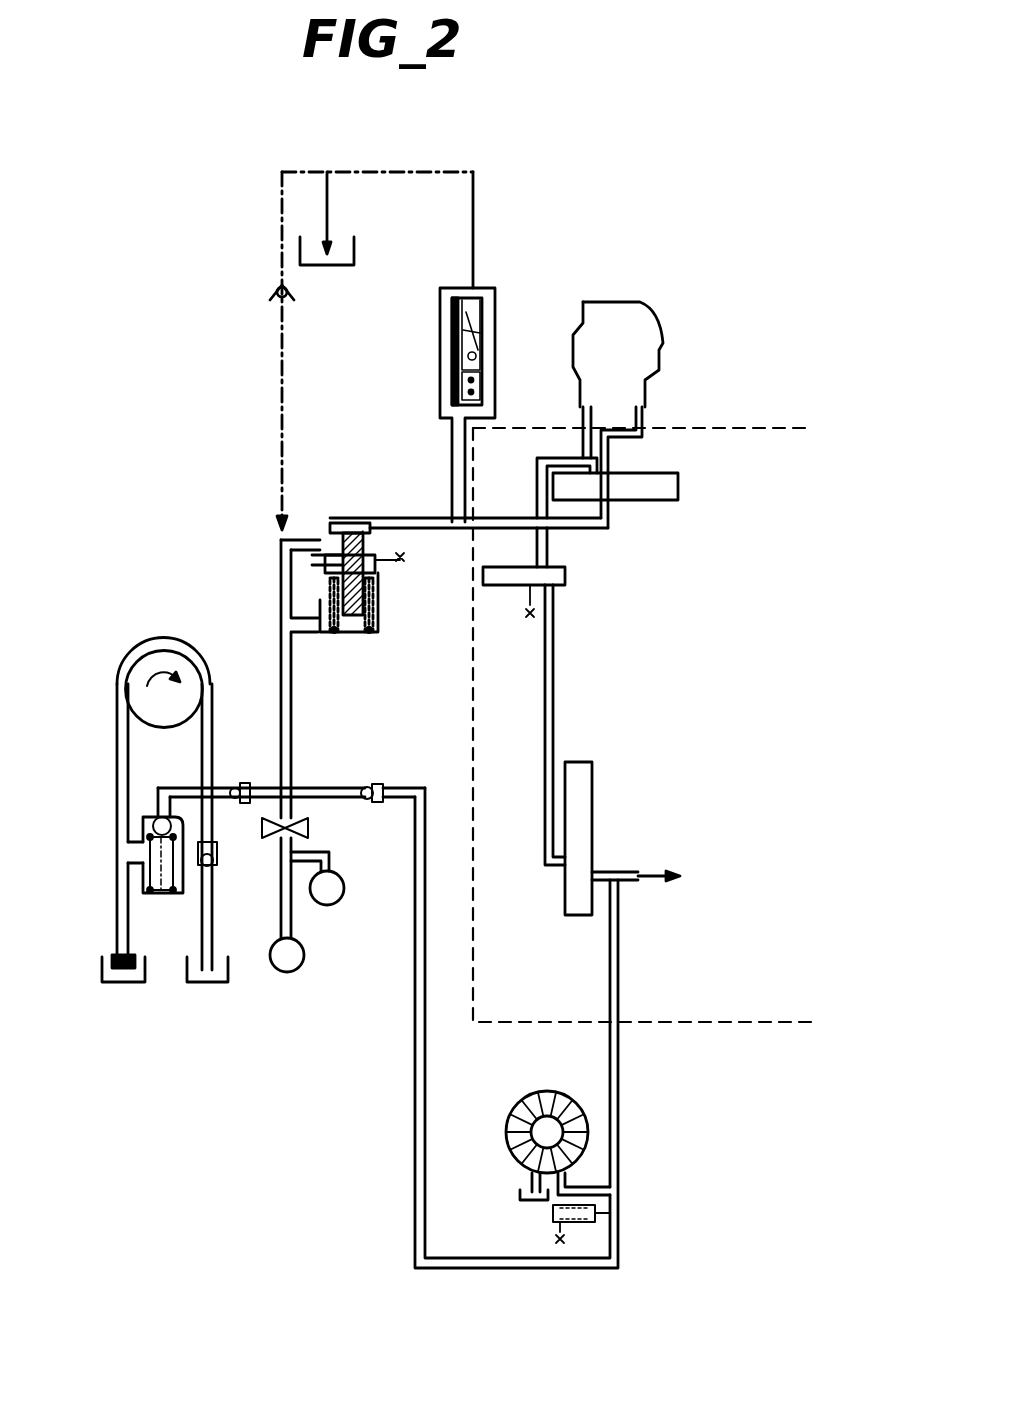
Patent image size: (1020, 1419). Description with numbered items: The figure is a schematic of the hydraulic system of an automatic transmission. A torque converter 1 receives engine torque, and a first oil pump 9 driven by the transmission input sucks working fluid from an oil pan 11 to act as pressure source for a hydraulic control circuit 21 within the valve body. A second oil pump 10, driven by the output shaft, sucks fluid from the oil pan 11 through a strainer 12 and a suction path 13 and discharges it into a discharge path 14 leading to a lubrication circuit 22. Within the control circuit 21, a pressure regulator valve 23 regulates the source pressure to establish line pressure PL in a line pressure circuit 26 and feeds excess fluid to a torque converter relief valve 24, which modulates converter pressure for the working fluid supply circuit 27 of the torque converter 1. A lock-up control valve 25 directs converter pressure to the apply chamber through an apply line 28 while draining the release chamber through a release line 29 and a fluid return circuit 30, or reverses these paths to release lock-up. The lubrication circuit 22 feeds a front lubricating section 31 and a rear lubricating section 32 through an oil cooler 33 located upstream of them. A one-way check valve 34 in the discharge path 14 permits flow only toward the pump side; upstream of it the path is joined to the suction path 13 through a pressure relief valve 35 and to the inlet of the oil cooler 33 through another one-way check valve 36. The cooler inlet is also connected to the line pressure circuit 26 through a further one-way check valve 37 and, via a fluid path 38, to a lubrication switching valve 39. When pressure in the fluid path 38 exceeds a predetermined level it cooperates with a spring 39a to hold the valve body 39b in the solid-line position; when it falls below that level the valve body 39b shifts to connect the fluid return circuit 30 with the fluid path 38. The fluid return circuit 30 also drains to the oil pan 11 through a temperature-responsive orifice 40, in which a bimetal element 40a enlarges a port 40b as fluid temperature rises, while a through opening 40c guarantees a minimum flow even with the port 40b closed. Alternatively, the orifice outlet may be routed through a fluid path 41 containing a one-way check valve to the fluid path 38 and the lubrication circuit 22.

The torque converter 1 is at (640, 302).
The first oil pump 9 is at (515, 1105).
The second oil pump 10 is at (150, 636).
The oil pan 11 is at (354, 259).
The strainer 12 is at (102, 983).
The suction path 13 is at (117, 765).
The discharge path 14 is at (212, 740).
The hydraulic control circuit 21 is at (735, 1022).
The lubrication circuit 22 is at (281, 912).
The pressure regulator valve 23 is at (590, 785).
The torque converter relief valve 24 is at (565, 583).
The lock-up control valve 25 is at (678, 495).
The line pressure circuit 26 is at (618, 940).
The working fluid supply circuit 27 is at (537, 488).
The apply line 28 is at (642, 445).
The release line 29 is at (583, 437).
The fluid return circuit 30 is at (592, 533).
The front lubricating section 31 is at (344, 885).
The rear lubricating section 32 is at (304, 960).
The oil cooler 33 is at (308, 828).
The one-way check valve 34 is at (218, 862).
The pressure relief valve 35 is at (152, 820).
The one-way check valve 36 is at (243, 805).
The one-way check valve 37 is at (370, 784).
The fluid path 38 is at (281, 655).
The lubrication switching valve 39 is at (382, 617).
The spring 39a is at (378, 600).
The valve body 39b is at (353, 636).
The temperature-responsive orifice 40 is at (481, 347).
The bimetal element 40a is at (462, 300).
The port 40b is at (480, 336).
The through opening 40c is at (478, 357).
The fluid path 41 is at (282, 392).